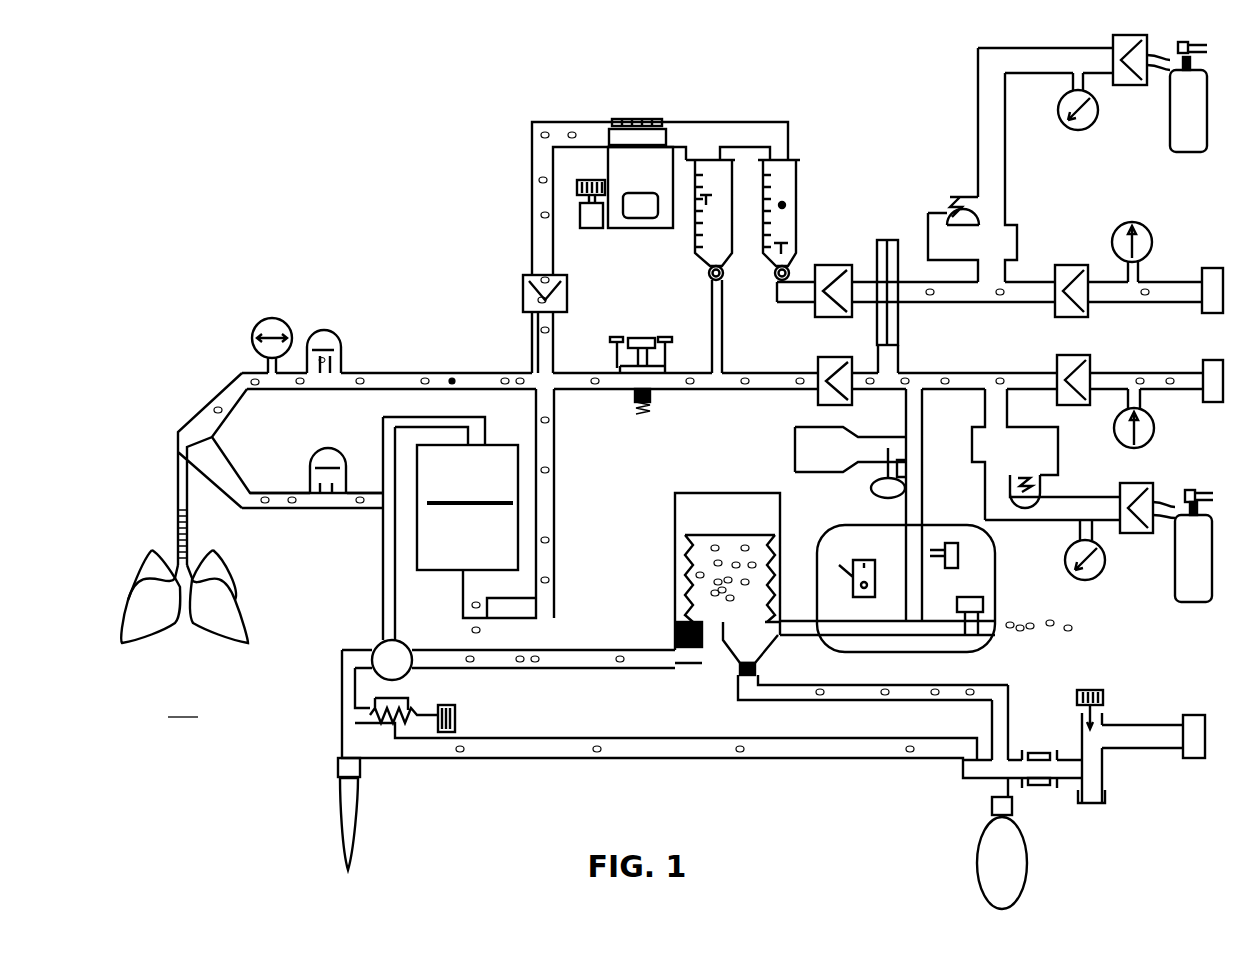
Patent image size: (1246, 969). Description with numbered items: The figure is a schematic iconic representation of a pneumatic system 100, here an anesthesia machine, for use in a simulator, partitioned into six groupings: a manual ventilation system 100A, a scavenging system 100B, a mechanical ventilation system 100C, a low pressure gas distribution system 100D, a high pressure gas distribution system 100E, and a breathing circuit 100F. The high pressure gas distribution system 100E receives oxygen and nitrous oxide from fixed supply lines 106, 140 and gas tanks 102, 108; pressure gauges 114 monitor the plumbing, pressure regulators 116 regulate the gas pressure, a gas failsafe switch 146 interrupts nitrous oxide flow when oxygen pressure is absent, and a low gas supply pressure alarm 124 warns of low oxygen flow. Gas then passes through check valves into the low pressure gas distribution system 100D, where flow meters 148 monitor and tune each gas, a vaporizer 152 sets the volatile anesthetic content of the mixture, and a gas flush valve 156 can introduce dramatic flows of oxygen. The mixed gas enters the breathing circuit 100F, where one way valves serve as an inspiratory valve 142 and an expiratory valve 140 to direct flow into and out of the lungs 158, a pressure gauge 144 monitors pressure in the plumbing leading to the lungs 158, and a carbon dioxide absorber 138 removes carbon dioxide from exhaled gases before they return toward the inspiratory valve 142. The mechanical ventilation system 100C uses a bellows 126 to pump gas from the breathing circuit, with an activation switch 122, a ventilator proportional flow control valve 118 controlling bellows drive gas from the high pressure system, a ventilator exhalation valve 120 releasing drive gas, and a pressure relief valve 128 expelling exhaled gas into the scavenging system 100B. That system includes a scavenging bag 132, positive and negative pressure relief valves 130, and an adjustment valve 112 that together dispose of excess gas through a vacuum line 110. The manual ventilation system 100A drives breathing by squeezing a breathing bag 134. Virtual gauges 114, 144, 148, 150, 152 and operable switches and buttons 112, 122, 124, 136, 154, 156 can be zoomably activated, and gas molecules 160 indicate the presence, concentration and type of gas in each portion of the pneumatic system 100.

The pneumatic system 100 is at (183, 707).
The manual ventilation system 100A is at (710, 755).
The scavenging system 100B is at (995, 777).
The mechanical ventilation system 100C is at (809, 576).
The low pressure gas distribution system 100D is at (625, 244).
The high pressure gas distribution system 100E is at (1047, 340).
The breathing circuit 100F is at (673, 412).
The gas tank 102 is at (1188, 156).
The fixed supply line 106 is at (1214, 360).
The gas tank 108 is at (1190, 604).
The vacuum line 110 is at (1193, 715).
The adjustment valve 112 is at (1090, 690).
The pressure gauges 114 is at (1088, 128).
The pressure regulators 116 is at (962, 198).
The ventilator proportional flow control valve 118 is at (960, 556).
The ventilator exhalation valve 120 is at (978, 637).
The activation switch 122 is at (925, 581).
The low gas supply pressure alarm 124 is at (795, 447).
The bellows 126 is at (683, 558).
The pressure relief valve 128 is at (735, 660).
The positive and negative pressure relief valves 130 is at (1040, 752).
The scavenging bag 132 is at (980, 860).
The breathing bag 134 is at (378, 814).
The operable switch and button 136 is at (458, 715).
The carbon dioxide absorber 138 is at (447, 580).
The expiratory valve 140 is at (325, 448).
The inspiratory valve 142 is at (343, 343).
The pressure gauge 144 is at (270, 316).
The gas failsafe switch 146 is at (887, 240).
The flow meters 148 is at (798, 188).
The virtual gauge 150 is at (693, 252).
The vaporizer 152 is at (640, 118).
The operable switch and button 154 is at (592, 230).
The gas flush valve 156 is at (640, 337).
The lungs 158 is at (247, 600).
The gas molecules 160 is at (510, 372).